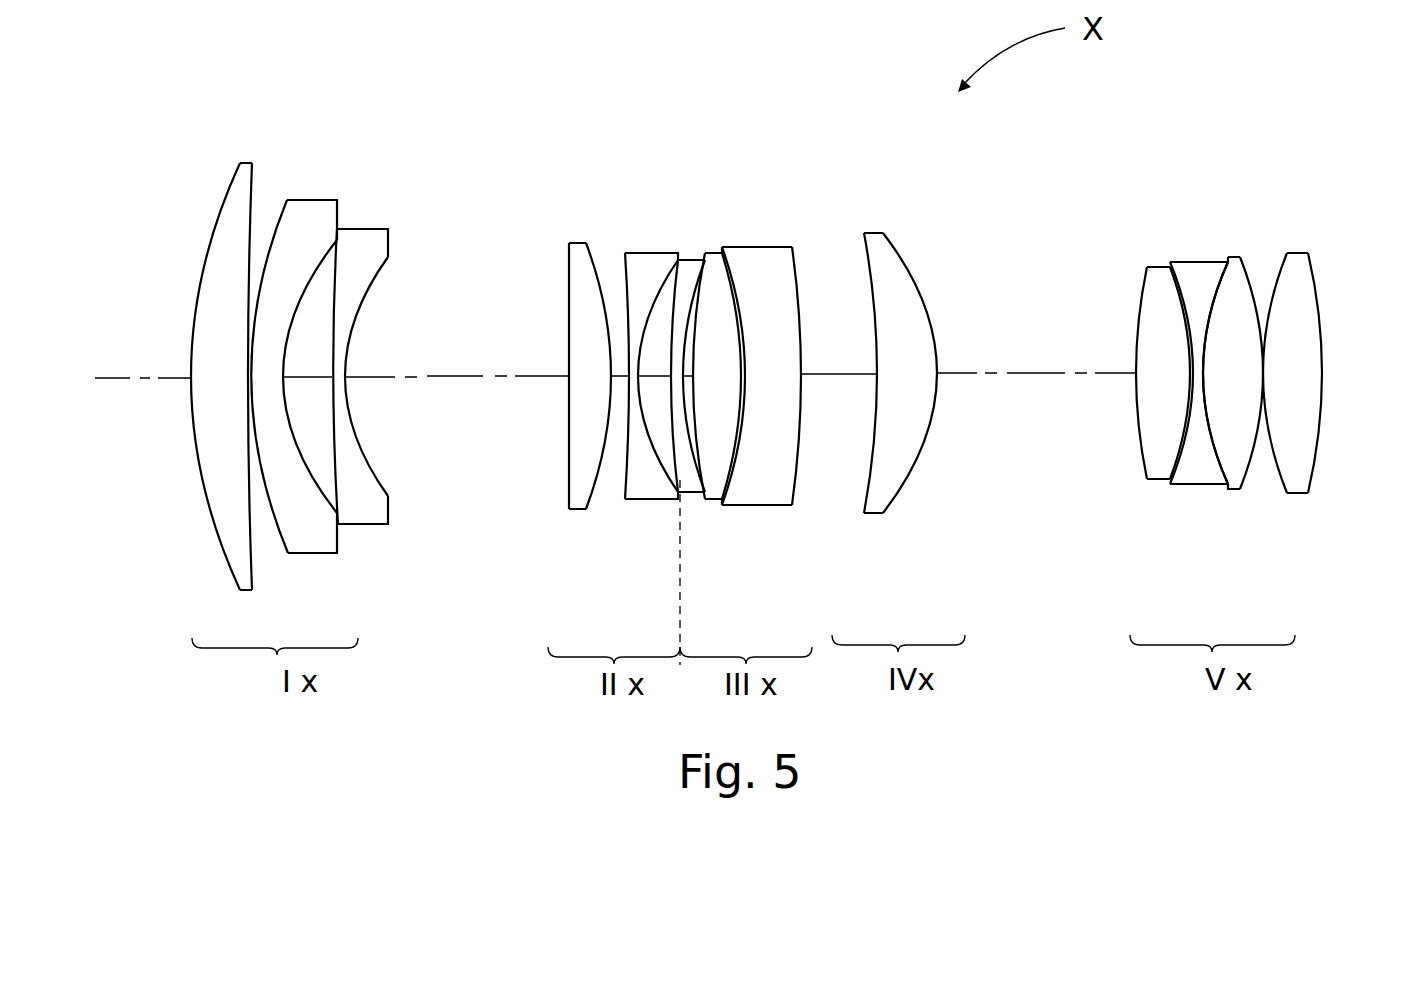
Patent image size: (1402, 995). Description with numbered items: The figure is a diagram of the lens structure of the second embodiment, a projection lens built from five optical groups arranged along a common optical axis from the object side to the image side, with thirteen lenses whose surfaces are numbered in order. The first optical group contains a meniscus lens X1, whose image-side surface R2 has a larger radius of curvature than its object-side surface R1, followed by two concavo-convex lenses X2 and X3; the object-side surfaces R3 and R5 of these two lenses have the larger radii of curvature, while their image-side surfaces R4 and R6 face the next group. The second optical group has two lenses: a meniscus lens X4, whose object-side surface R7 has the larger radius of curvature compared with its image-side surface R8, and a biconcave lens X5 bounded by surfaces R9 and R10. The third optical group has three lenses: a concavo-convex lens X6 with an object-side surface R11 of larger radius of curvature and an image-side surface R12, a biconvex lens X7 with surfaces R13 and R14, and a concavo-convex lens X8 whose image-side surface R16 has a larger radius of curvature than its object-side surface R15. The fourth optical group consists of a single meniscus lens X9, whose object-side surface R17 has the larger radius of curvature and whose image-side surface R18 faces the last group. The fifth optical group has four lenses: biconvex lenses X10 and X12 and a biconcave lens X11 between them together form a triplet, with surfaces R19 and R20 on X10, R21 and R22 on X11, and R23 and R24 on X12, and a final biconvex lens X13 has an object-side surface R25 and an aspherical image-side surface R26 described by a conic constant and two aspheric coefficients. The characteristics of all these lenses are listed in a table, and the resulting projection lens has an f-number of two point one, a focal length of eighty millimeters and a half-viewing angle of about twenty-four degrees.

The meniscus lens X1 is at (225, 331).
The concavo-convex lens X2 is at (322, 362).
The concavo-convex lens X3 is at (394, 348).
The meniscus lens X4 is at (557, 400).
The biconcave lens X5 is at (647, 345).
The concavo-convex lens X6 is at (717, 407).
The biconvex lens X7 is at (761, 371).
The concavo-convex lens X8 is at (822, 392).
The meniscus lens X9 is at (901, 354).
The biconvex lens X10 is at (1123, 418).
The biconcave lens X11 is at (1184, 363).
The biconvex lens X12 is at (1270, 356).
The biconvex lens X13 is at (1328, 339).
The lens surface R1 is at (250, 165).
The lens surface R2 is at (254, 197).
The lens surface R3 is at (282, 535).
The lens surface R4 is at (304, 490).
The lens surface R5 is at (338, 263).
The lens surface R6 is at (381, 273).
The lens surface R7 is at (574, 462).
The lens surface R8 is at (606, 497).
The lens surface R9 is at (625, 272).
The lens surface R10 is at (660, 257).
The lens surface R11 is at (683, 490).
The lens surface R12 is at (708, 472).
The lens surface R13 is at (699, 262).
The lens surface R14 is at (742, 337).
The lens surface R15 is at (750, 470).
The lens surface R16 is at (797, 470).
The lens surface R17 is at (872, 308).
The lens surface R18 is at (907, 258).
The lens surface R19 is at (1140, 440).
The lens surface R20 is at (1180, 443).
The lens surface R21 is at (1178, 262).
The lens surface R22 is at (1225, 302).
The lens surface R23 is at (1217, 453).
The lens surface R24 is at (1255, 455).
The lens surface R25 is at (1275, 292).
The lens surface R26 is at (1318, 340).